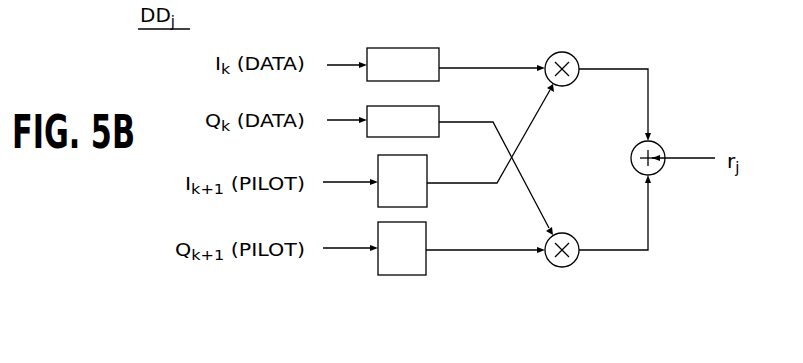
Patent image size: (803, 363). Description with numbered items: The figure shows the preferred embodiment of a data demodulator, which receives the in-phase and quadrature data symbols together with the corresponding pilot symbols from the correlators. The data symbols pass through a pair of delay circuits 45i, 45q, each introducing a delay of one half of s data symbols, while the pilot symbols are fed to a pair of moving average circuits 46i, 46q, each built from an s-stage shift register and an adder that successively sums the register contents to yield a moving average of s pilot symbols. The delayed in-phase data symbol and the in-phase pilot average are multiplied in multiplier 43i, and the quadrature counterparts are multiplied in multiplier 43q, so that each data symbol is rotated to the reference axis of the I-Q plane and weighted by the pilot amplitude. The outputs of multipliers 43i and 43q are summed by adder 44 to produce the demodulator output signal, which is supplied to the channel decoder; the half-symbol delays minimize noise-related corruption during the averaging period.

The delay circuit 45i is at (439, 50).
The delay circuit 45q is at (439, 108).
The moving average circuit 46i is at (427, 171).
The moving average circuit 46q is at (426, 238).
The multiplier 43i is at (563, 52).
The multiplier 43q is at (567, 233).
The adder 44 is at (664, 152).